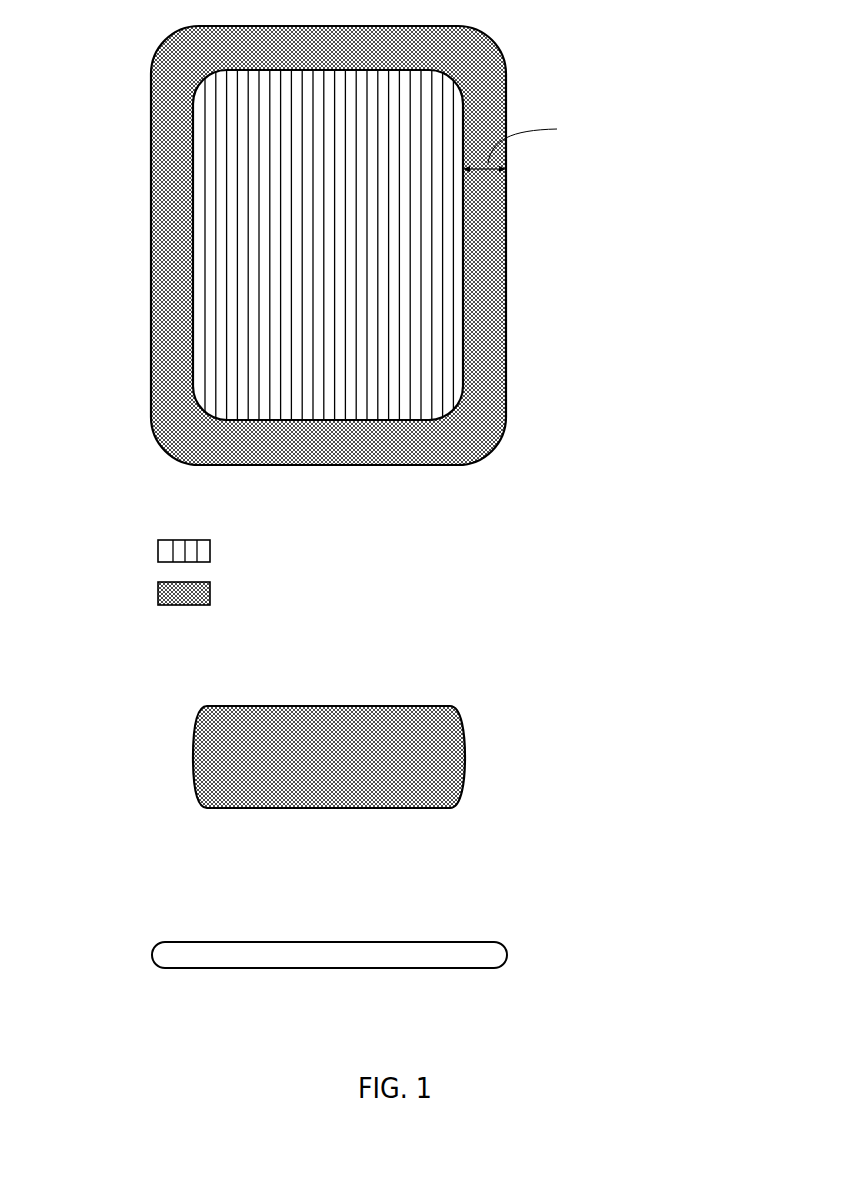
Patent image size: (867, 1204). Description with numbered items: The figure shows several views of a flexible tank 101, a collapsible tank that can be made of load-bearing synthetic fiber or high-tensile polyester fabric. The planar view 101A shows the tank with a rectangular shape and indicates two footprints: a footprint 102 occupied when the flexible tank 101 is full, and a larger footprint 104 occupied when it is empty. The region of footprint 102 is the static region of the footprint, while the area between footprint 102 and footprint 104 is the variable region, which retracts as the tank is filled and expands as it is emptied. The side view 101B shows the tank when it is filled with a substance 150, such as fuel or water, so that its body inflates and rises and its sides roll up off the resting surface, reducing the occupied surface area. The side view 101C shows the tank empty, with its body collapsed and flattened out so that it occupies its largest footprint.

The flexible tank 101 is at (105, 64).
The planar view 101A is at (352, 256).
The side view when full 101B is at (355, 769).
The side view when empty 101C is at (353, 966).
The footprint when full 102 is at (475, 245).
The footprint when empty 104 is at (506, 388).
The substance 150 is at (435, 740).